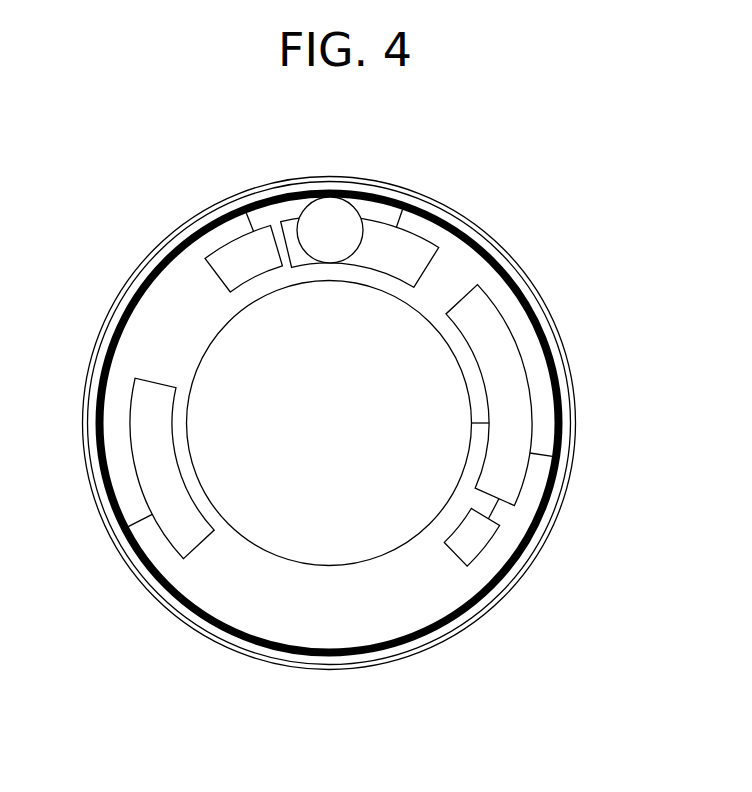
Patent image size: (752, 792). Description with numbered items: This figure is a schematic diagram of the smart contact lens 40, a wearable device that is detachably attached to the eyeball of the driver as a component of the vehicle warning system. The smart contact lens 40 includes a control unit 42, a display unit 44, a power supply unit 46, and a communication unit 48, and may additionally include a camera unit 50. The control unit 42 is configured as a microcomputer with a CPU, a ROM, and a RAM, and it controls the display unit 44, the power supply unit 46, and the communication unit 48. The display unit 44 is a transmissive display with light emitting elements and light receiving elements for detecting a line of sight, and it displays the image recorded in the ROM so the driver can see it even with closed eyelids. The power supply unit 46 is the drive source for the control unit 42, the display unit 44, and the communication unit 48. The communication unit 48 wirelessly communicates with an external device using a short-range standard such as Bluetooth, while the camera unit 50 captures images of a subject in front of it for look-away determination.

The smart contact lens 40 is at (533, 172).
The control unit 42 is at (524, 405).
The display unit 44 is at (225, 346).
The power supply unit 46 is at (233, 262).
The communication unit 48 is at (145, 412).
The camera unit 50 is at (346, 217).